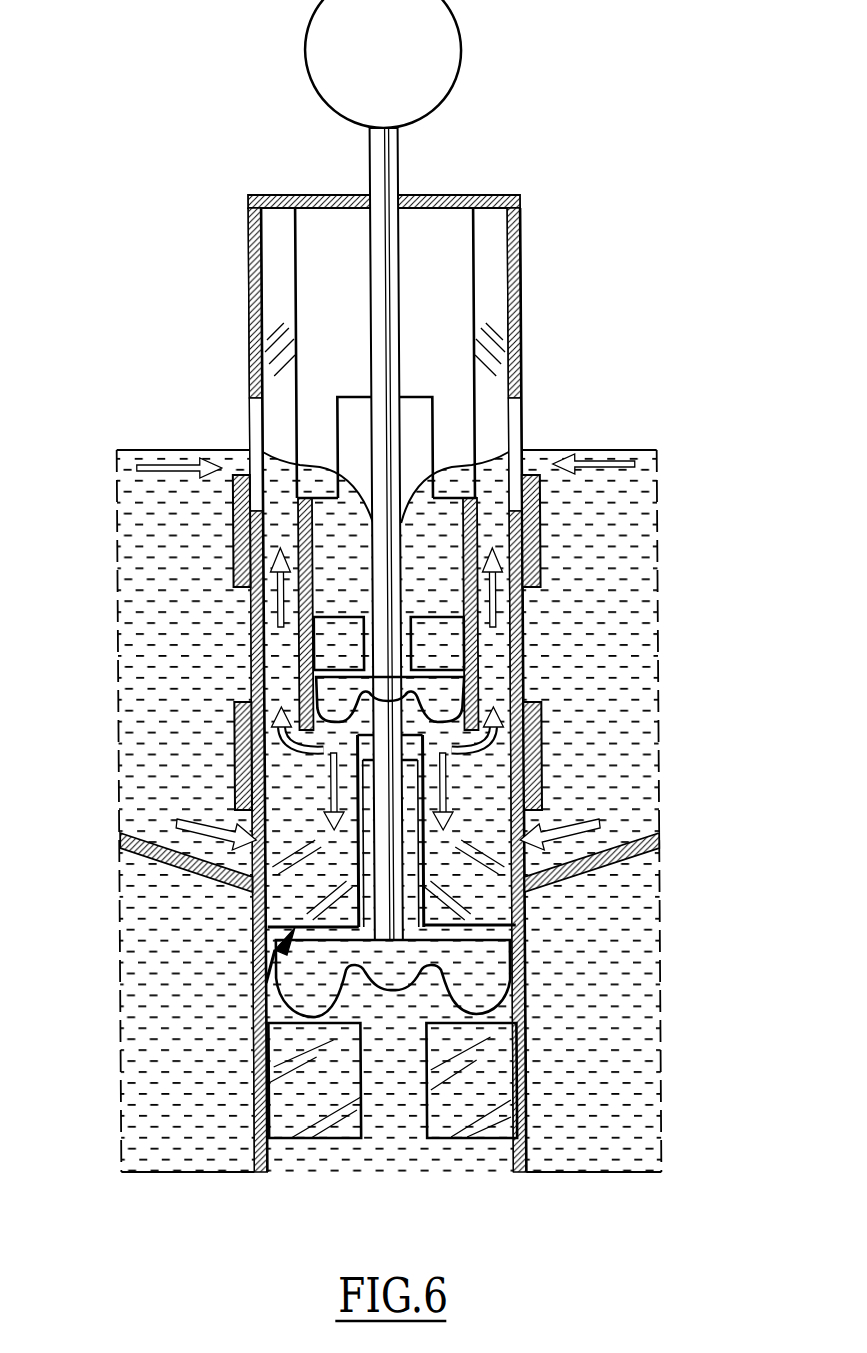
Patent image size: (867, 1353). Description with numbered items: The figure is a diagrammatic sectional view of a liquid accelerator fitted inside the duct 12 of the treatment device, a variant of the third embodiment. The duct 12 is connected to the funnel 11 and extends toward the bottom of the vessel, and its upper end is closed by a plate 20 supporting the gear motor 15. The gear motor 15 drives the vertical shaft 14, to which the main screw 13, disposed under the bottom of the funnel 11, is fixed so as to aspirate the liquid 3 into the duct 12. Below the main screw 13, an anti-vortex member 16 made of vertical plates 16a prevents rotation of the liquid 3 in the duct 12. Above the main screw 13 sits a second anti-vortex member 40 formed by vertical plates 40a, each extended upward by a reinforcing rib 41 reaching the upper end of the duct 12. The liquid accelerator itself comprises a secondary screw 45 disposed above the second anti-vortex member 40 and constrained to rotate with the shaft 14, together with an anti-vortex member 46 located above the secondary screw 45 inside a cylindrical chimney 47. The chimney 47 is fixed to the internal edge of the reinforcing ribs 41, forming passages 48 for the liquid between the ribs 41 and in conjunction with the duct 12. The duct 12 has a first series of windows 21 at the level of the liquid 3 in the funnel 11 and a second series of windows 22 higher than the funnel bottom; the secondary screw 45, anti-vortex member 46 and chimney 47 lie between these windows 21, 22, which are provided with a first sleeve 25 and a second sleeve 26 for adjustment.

The liquid 3 is at (600, 535).
The funnel 11 is at (608, 852).
The duct 12 is at (526, 1155).
The main screw 13 is at (478, 975).
The vertical shaft 14 is at (388, 333).
The gear motor 15 is at (450, 92).
The anti-vortex member 16 is at (263, 1108).
The vertical plates 16a is at (467, 1100).
The plate 20 is at (448, 193).
The first series of windows 21 is at (513, 428).
The second series of windows 22 is at (522, 823).
The first sleeve 25 is at (240, 532).
The second sleeve 26 is at (236, 752).
The second anti-vortex member 40 is at (263, 983).
The vertical plates 40a is at (304, 882).
The reinforcing rib 41 is at (248, 372).
The secondary screw 45 is at (470, 695).
The anti-vortex member 46 is at (440, 654).
The cylindrical chimney 47 is at (299, 603).
The passages 48 is at (296, 680).